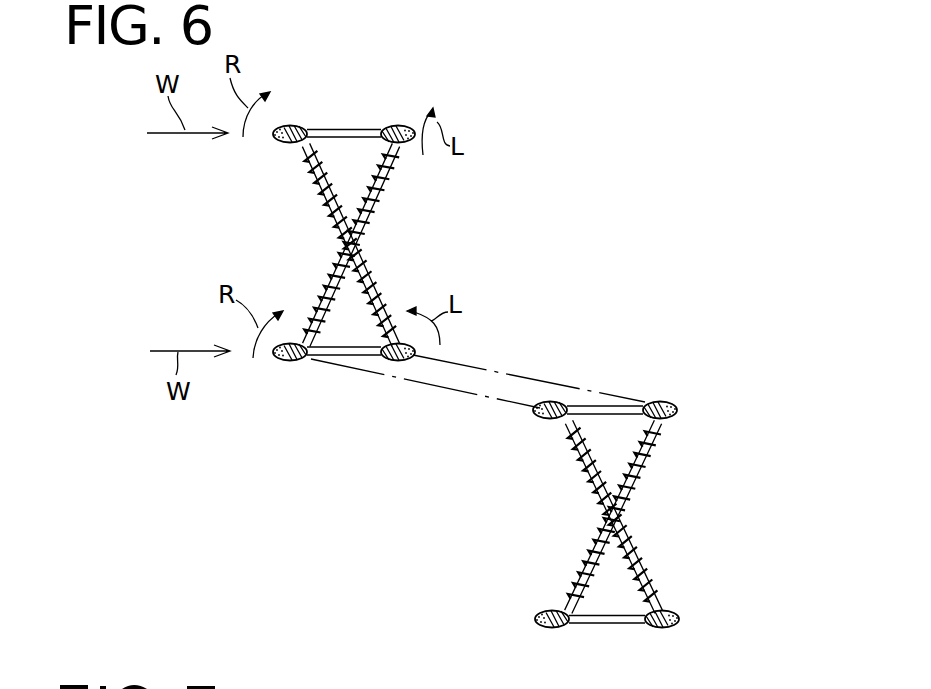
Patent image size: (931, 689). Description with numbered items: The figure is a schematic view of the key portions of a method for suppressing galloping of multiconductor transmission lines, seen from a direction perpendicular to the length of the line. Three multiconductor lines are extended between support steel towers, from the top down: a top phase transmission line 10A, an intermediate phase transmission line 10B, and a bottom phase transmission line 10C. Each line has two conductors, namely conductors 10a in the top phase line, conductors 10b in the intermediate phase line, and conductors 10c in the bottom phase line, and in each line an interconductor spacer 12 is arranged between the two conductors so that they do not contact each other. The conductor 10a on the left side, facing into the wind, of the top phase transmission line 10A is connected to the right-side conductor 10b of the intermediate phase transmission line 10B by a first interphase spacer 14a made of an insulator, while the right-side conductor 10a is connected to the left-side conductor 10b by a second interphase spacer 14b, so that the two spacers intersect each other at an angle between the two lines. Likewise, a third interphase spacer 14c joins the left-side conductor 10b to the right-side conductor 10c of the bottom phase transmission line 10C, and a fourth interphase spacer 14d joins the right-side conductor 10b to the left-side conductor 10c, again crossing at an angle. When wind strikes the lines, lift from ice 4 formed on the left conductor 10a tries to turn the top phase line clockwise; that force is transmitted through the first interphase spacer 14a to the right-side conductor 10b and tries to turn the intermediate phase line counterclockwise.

The ice 4 is at (393, 127).
The top phase transmission line 10A is at (350, 124).
The intermediate phase transmission line 10B is at (588, 382).
The bottom phase transmission line 10C is at (686, 622).
The conductor 10a is at (301, 124).
The conductor 10b is at (292, 364).
The conductor 10c is at (550, 608).
The interconductor spacer 12 is at (375, 126).
The first interphase spacer 14a is at (330, 206).
The second interphase spacer 14b is at (375, 208).
The third interphase spacer 14c is at (592, 480).
The fourth interphase spacer 14d is at (642, 480).